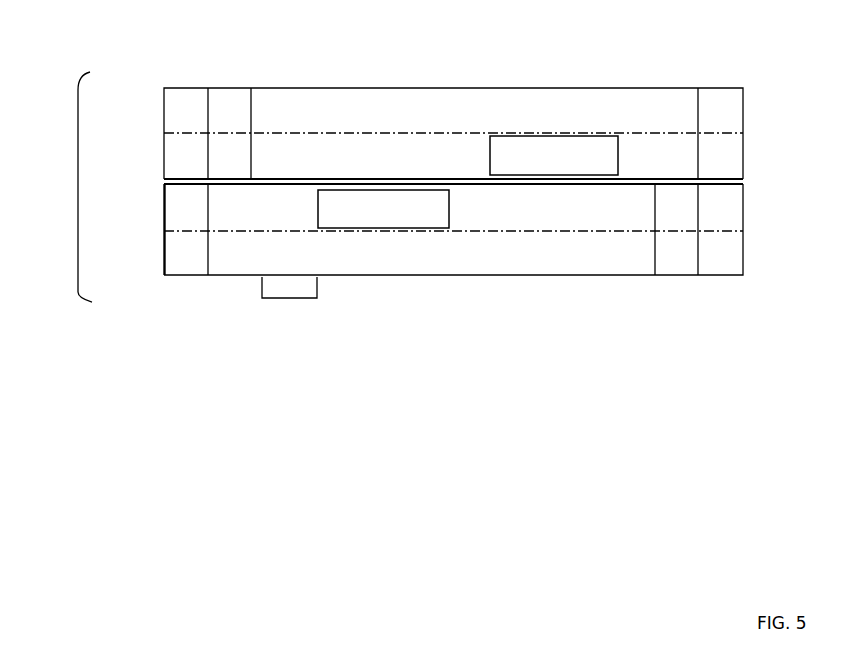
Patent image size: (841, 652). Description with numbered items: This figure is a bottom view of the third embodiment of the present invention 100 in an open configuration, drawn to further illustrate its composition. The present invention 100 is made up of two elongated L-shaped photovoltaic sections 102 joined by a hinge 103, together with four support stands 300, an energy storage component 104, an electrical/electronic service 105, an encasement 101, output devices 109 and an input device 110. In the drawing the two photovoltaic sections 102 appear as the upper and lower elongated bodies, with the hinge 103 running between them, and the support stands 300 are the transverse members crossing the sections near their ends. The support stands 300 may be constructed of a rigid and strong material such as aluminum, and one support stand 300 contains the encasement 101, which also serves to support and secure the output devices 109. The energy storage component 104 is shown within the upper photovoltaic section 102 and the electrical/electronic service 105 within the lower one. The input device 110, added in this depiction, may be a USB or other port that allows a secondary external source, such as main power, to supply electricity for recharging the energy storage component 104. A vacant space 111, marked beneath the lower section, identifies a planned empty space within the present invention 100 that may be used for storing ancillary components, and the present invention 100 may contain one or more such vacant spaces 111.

The present invention 100 is at (75, 185).
The encasement 101 is at (164, 253).
The photovoltaic sections 102 is at (525, 93).
The hinge 103 is at (743, 181).
The energy storage component 104 is at (505, 143).
The electrical/electronic service 105 is at (368, 217).
The output devices 109 is at (164, 213).
The input device 110 is at (743, 118).
The vacant space 111 is at (295, 302).
The support stands 300 is at (232, 99).